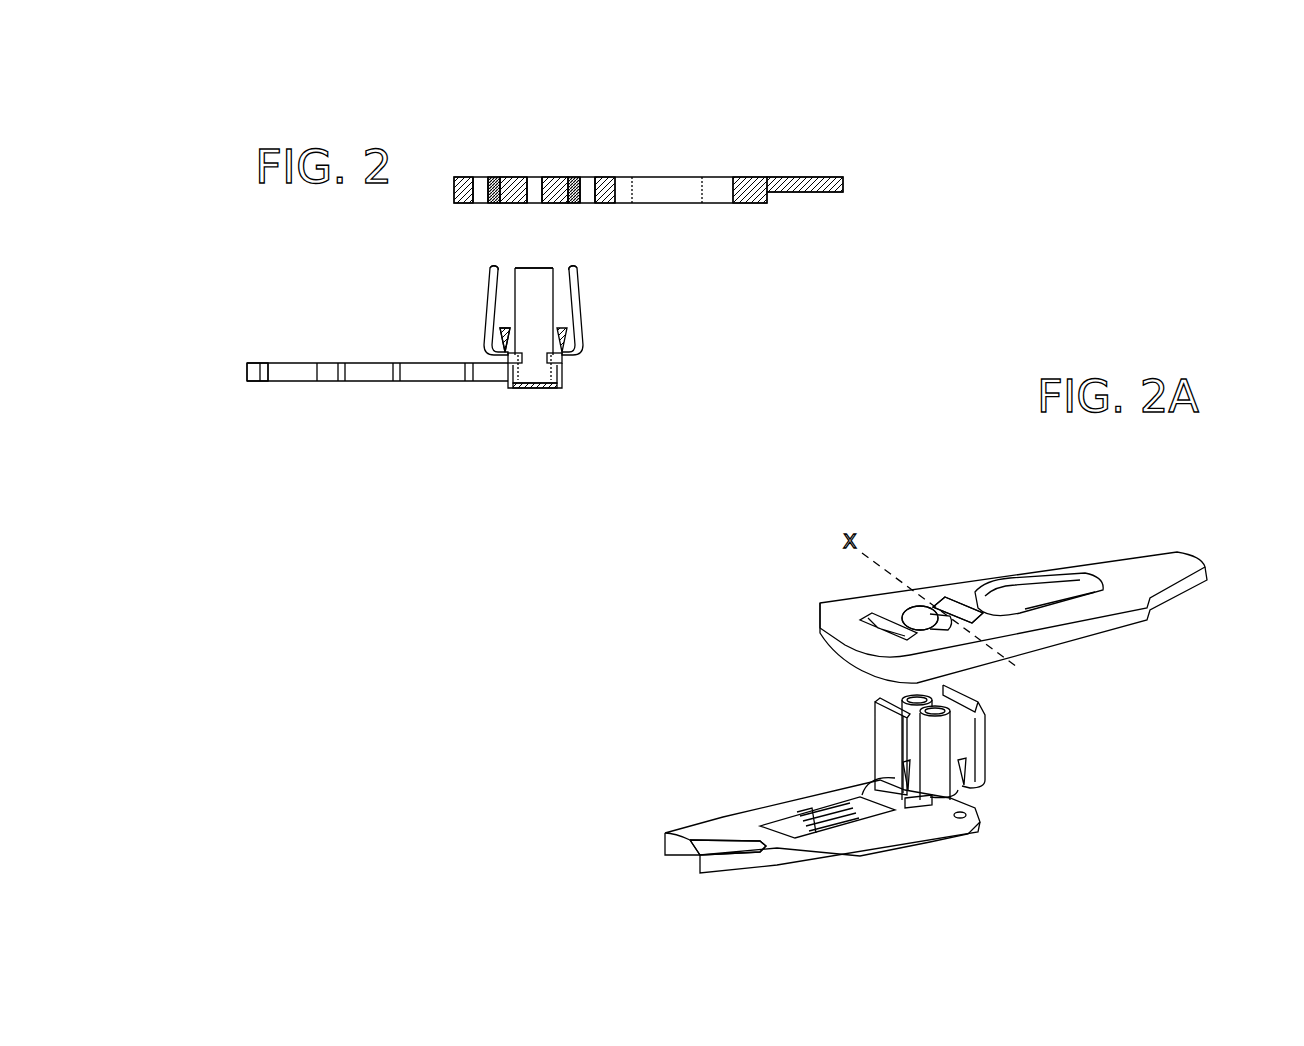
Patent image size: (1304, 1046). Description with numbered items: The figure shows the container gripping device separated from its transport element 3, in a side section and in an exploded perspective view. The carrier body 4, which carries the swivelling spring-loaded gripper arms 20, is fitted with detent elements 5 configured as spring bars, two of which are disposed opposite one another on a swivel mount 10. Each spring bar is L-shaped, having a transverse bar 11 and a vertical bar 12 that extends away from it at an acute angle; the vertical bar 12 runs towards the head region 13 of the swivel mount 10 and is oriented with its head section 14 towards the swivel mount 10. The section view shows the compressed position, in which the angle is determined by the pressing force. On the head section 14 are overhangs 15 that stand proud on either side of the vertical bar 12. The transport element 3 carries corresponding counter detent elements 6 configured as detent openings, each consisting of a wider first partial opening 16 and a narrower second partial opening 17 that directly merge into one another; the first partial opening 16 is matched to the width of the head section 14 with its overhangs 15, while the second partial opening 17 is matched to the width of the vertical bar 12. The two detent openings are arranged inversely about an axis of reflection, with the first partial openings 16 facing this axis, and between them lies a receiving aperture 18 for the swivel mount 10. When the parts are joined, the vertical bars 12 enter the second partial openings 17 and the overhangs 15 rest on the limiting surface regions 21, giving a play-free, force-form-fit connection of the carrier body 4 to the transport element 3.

In FIG. 2, the transport element 3 is at (762, 165).
In FIG. 2A, the transport element 3 is at (1115, 548).
In FIG. 2, the carrier body 4 is at (316, 390).
In FIG. 2A, the carrier body 4 is at (822, 825).
In FIG. 2, the detent element 5 is at (490, 291).
In FIG. 2, the counter detent element 6 is at (498, 165).
In FIG. 2A, the counter detent element 6 is at (942, 613).
In FIG. 2, the swivel mount 10 is at (540, 300).
In FIG. 2A, the swivel mount 10 is at (926, 747).
In FIG. 2, the transverse bar 11 is at (505, 350).
In FIG. 2, the vertical bar 12 is at (490, 310).
In FIG. 2A, the vertical bar 12 is at (902, 758).
In FIG. 2, the head region 13 is at (545, 268).
In FIG. 2, the head section 14 is at (495, 268).
In FIG. 2A, the head section 14 is at (968, 685).
In FIG. 2A, the overhang 15 is at (903, 723).
In FIG. 2A, the first partial opening 16 is at (953, 607).
In FIG. 2A, the second partial opening 17 is at (967, 600).
In FIG. 2, the receiving aperture 18 is at (540, 165).
In FIG. 2A, the receiving aperture 18 is at (907, 602).
In FIG. 2, the gripper arm 20 is at (277, 375).
In FIG. 2A, the gripper arm 20 is at (733, 847).
In FIG. 2A, the surface region 21 is at (860, 613).